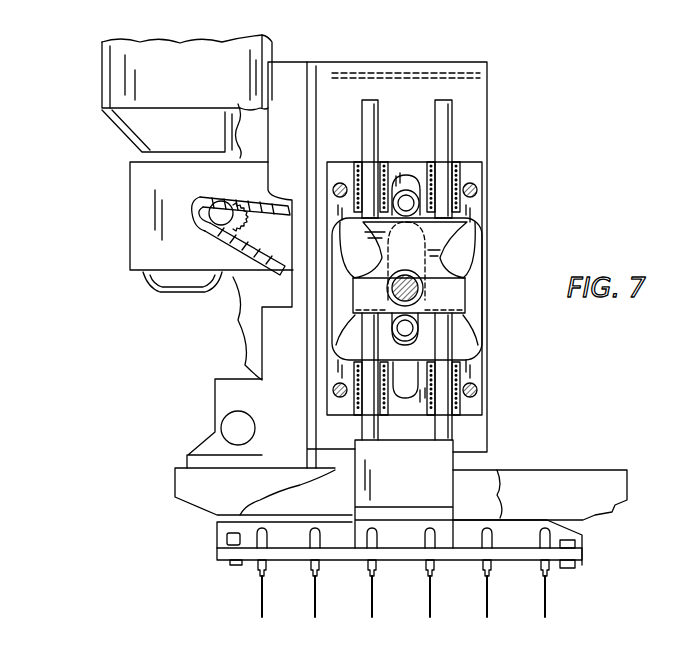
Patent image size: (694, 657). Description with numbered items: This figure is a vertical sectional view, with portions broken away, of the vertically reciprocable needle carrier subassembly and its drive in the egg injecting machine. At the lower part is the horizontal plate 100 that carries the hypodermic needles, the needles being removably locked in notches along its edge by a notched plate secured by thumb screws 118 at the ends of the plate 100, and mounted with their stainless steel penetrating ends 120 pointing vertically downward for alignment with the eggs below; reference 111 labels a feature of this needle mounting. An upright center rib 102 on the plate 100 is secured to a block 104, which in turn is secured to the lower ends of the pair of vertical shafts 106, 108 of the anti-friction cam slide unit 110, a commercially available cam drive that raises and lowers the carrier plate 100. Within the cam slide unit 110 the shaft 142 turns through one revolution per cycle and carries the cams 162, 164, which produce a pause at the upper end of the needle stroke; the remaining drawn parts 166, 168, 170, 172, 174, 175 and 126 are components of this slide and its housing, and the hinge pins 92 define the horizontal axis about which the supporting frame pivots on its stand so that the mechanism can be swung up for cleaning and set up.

The hinge pins 92 is at (230, 424).
The horizontal plate 100 is at (585, 561).
The upright center rib 102 is at (467, 545).
The block 104 is at (445, 466).
The vertical shaft 106 is at (440, 390).
The vertical shaft 108 is at (378, 104).
The anti-friction cam slide unit 110 is at (492, 192).
The needle clamps 111 is at (549, 578).
The thumb screws 118 is at (583, 545).
The penetrating ends 120 is at (549, 618).
The motor housing 126 is at (101, 103).
The shaft 142 is at (423, 288).
The cam 162 is at (447, 242).
The cam 164 is at (478, 272).
The lower pin 166 is at (455, 312).
The upper pin 168 is at (406, 190).
The slot 170 is at (404, 348).
The upper guide 172 is at (460, 168).
The lower guide 174 is at (458, 410).
The cover plate 175 is at (488, 210).